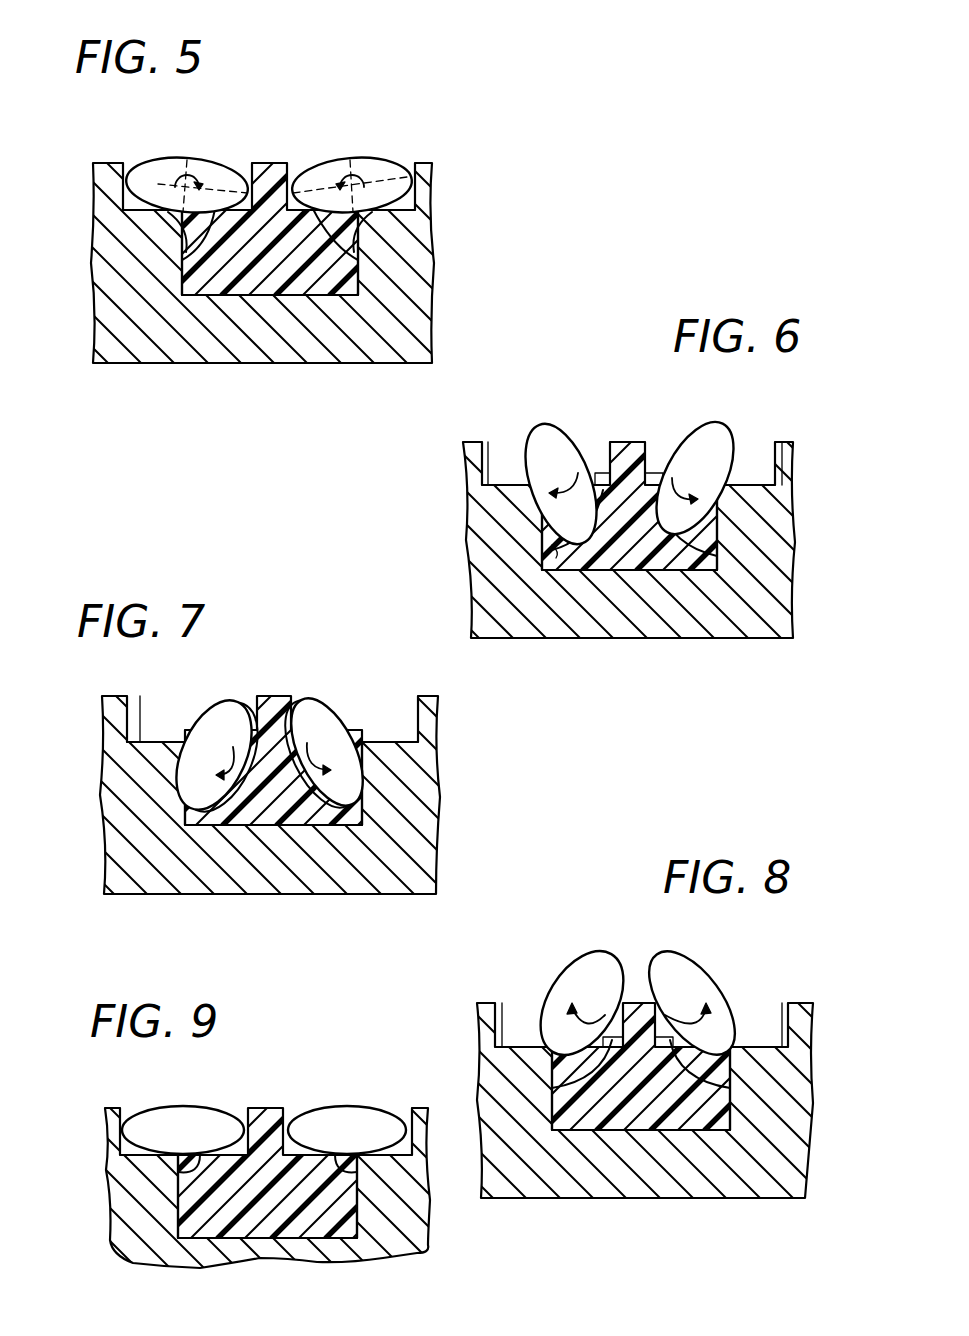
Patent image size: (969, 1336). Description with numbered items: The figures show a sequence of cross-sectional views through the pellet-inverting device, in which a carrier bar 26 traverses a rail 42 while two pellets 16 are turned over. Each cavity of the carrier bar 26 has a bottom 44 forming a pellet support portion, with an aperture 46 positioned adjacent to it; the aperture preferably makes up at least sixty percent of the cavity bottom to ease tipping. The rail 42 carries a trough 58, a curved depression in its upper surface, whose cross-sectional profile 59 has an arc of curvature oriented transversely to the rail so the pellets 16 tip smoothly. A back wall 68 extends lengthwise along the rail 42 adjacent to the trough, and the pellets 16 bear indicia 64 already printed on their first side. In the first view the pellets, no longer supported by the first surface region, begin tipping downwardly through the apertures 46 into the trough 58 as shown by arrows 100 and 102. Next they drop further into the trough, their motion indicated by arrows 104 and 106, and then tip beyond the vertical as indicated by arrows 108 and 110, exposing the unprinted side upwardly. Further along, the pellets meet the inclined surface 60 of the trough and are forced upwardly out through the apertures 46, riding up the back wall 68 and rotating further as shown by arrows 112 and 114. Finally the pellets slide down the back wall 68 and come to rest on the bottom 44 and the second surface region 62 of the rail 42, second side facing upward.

In FIG. 5, the pellets 16 is at (142, 170).
In FIG. 6, the pellets 16 is at (540, 427).
In FIG. 7, the pellets 16 is at (225, 710).
In FIG. 8, the pellets 16 is at (575, 990).
In FIG. 9, the pellets 16 is at (168, 1108).
In FIG. 5, the carrier bars 26 is at (413, 217).
In FIG. 6, the carrier bars 26 is at (770, 520).
In FIG. 7, the carrier bars 26 is at (428, 738).
In FIG. 8, the carrier bars 26 is at (805, 1003).
In FIG. 9, the carrier bars 26 is at (135, 1250).
In FIG. 5, the rail 42 is at (363, 285).
In FIG. 6, the rail 42 is at (703, 567).
In FIG. 7, the rail 42 is at (320, 818).
In FIG. 8, the rail 42 is at (718, 1127).
In FIG. 9, the rail 42 is at (342, 1228).
In FIG. 5, the bottom 44 is at (133, 208).
In FIG. 6, the bottom 44 is at (488, 483).
In FIG. 7, the bottom 44 is at (140, 710).
In FIG. 8, the bottom 44 is at (502, 1040).
In FIG. 9, the bottom 44 is at (117, 1140).
In FIG. 5, the aperture 46 is at (192, 222).
In FIG. 6, the aperture 46 is at (530, 488).
In FIG. 7, the aperture 46 is at (193, 728).
In FIG. 5, the trough 58 is at (192, 238).
In FIG. 6, the trough 58 is at (550, 530).
In FIG. 7, the trough 58 is at (187, 748).
In FIG. 8, the trough 58 is at (562, 1073).
In FIG. 5, the cross-sectional profile 59 is at (190, 248).
In FIG. 6, the cross-sectional profile 59 is at (552, 552).
In FIG. 8, the inclined surface 60 is at (558, 1062).
In FIG. 9, the second surface region 62 is at (192, 1168).
In FIG. 5, the indicia 64 is at (192, 162).
In FIG. 6, the indicia 64 is at (663, 457).
In FIG. 5, the back wall 68 is at (271, 165).
In FIG. 6, the back wall 68 is at (630, 442).
In FIG. 7, the back wall 68 is at (277, 696).
In FIG. 8, the back wall 68 is at (637, 1003).
In FIG. 9, the back wall 68 is at (267, 1108).
In FIG. 5, the arrow 100 is at (160, 180).
In FIG. 5, the arrow 102 is at (368, 170).
In FIG. 6, the arrow 104 is at (573, 480).
In FIG. 6, the arrow 106 is at (705, 545).
In FIG. 7, the arrow 108 is at (227, 763).
In FIG. 7, the arrow 110 is at (347, 790).
In FIG. 8, the arrow 112 is at (578, 1017).
In FIG. 8, the arrow 114 is at (695, 1013).